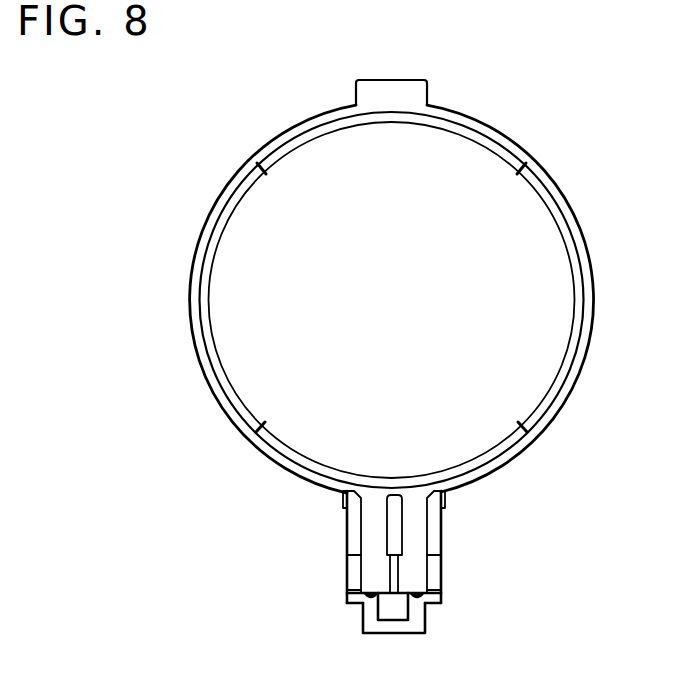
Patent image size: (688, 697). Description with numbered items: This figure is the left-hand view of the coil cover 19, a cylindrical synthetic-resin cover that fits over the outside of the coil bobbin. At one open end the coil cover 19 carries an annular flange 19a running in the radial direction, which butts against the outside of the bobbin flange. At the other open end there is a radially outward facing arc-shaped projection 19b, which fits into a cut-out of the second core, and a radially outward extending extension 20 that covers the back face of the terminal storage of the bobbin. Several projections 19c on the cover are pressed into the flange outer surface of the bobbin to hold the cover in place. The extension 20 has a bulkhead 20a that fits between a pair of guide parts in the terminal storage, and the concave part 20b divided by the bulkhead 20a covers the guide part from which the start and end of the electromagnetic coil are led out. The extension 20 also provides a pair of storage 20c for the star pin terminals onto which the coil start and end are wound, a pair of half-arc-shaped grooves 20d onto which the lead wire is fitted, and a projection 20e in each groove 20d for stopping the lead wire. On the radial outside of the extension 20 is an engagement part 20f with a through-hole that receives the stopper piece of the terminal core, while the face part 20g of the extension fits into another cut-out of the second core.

The coil cover 19 is at (434, 273).
The annular flange 19a is at (580, 263).
The arc-shaped projection 19b is at (400, 79).
The projections 19c is at (260, 168).
The extension 20 is at (364, 555).
The bulkhead 20a is at (394, 492).
The concave part 20b is at (375, 533).
The storage 20c is at (375, 570).
The half-arc-shaped grooves 20d is at (371, 601).
The projection for stopping lead wire 20e is at (349, 593).
The engagement part 20f is at (394, 634).
The face part 20g is at (343, 498).